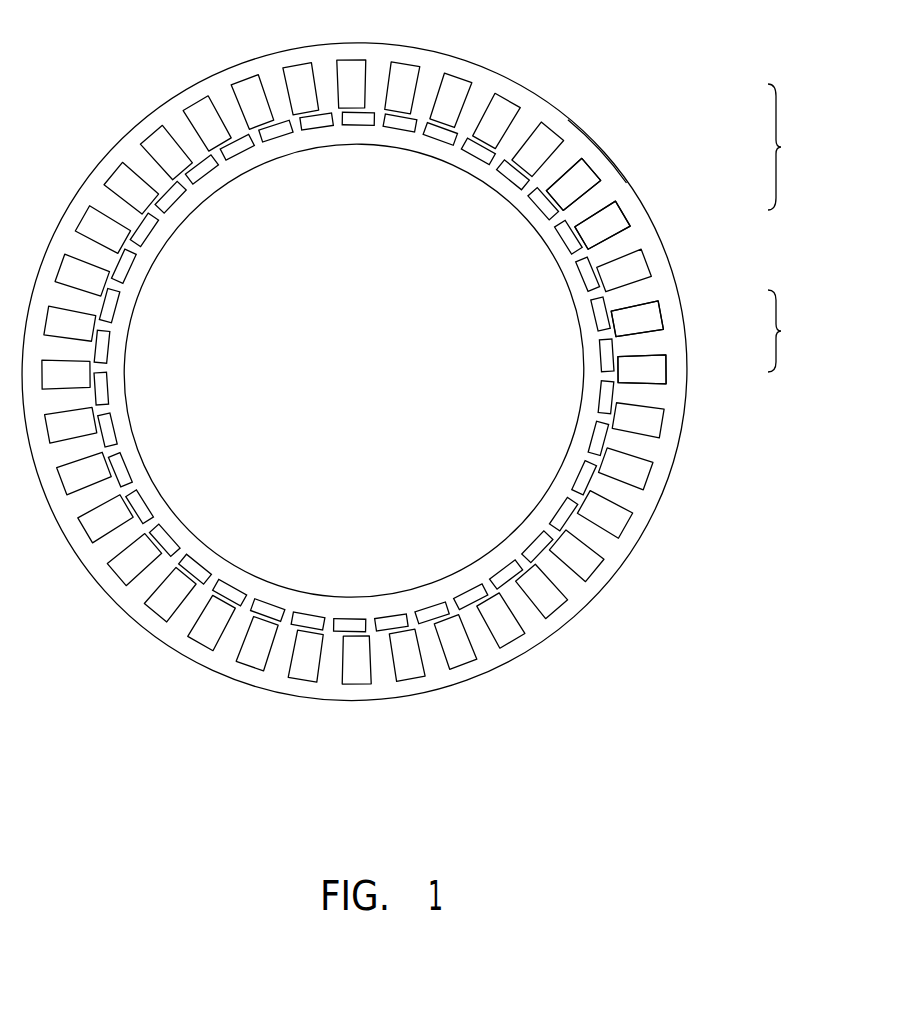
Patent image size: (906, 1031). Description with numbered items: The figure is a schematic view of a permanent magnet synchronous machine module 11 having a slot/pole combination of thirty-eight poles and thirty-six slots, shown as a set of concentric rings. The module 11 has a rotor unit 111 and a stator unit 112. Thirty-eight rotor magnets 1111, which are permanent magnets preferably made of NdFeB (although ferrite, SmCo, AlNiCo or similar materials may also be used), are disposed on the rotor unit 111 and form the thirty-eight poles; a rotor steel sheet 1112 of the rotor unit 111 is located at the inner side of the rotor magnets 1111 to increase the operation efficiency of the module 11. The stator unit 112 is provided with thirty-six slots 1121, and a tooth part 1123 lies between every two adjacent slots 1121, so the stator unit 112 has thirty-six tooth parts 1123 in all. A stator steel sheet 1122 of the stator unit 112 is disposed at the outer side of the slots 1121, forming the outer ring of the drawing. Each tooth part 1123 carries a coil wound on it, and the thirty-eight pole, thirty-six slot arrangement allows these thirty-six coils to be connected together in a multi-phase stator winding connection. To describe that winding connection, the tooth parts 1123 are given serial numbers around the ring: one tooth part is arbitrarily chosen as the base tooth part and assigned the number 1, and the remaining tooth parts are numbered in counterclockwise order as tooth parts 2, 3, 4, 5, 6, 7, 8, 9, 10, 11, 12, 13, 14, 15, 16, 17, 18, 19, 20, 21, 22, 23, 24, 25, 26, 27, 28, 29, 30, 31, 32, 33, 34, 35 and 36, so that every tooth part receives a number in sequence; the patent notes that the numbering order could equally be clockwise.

The permanent magnet synchronous machine module 11 is at (102, 90).
The rotor unit 111 is at (796, 331).
The rotor magnets 1111 is at (612, 314).
The rotor steel sheet 1112 is at (585, 385).
The stator unit 112 is at (796, 147).
The slots 1121 is at (610, 218).
The stator steel sheet 1122 is at (603, 167).
The tooth part 1123 is at (597, 145).
The base tooth part 1 is at (642, 357).
The tooth part number 2 is at (637, 308).
The tooth part number 3 is at (623, 261).
The tooth part number 4 is at (602, 218).
The tooth part number 5 is at (570, 179).
The tooth part number 6 is at (532, 145).
The tooth part number 7 is at (490, 119).
The tooth part number 8 is at (444, 100).
The tooth part number 9 is at (394, 88).
The tooth part number 10 is at (340, 84).
The tooth part number 12 is at (241, 103).
The tooth part number 13 is at (197, 127).
The tooth part number 14 is at (158, 158).
The tooth part number 15 is at (124, 196).
The tooth part number 16 is at (100, 239).
The tooth part number 17 is at (81, 285).
The tooth part number 18 is at (70, 335).
The tooth part number 19 is at (66, 387).
The tooth part number 20 is at (71, 437).
The tooth part number 21 is at (85, 485).
The tooth part number 22 is at (109, 528).
The tooth part number 23 is at (140, 568).
The tooth part number 24 is at (178, 600).
The tooth part number 25 is at (221, 627).
The tooth part number 26 is at (267, 644).
The tooth part number 27 is at (315, 656).
The tooth part number 28 is at (368, 660).
The tooth part number 29 is at (418, 655).
The tooth part number 30 is at (466, 640).
The tooth part number 31 is at (510, 616).
The tooth part number 32 is at (550, 585).
The tooth part number 33 is at (582, 547).
The tooth part number 34 is at (609, 504).
The tooth part number 35 is at (625, 457).
The tooth part number 36 is at (638, 409).